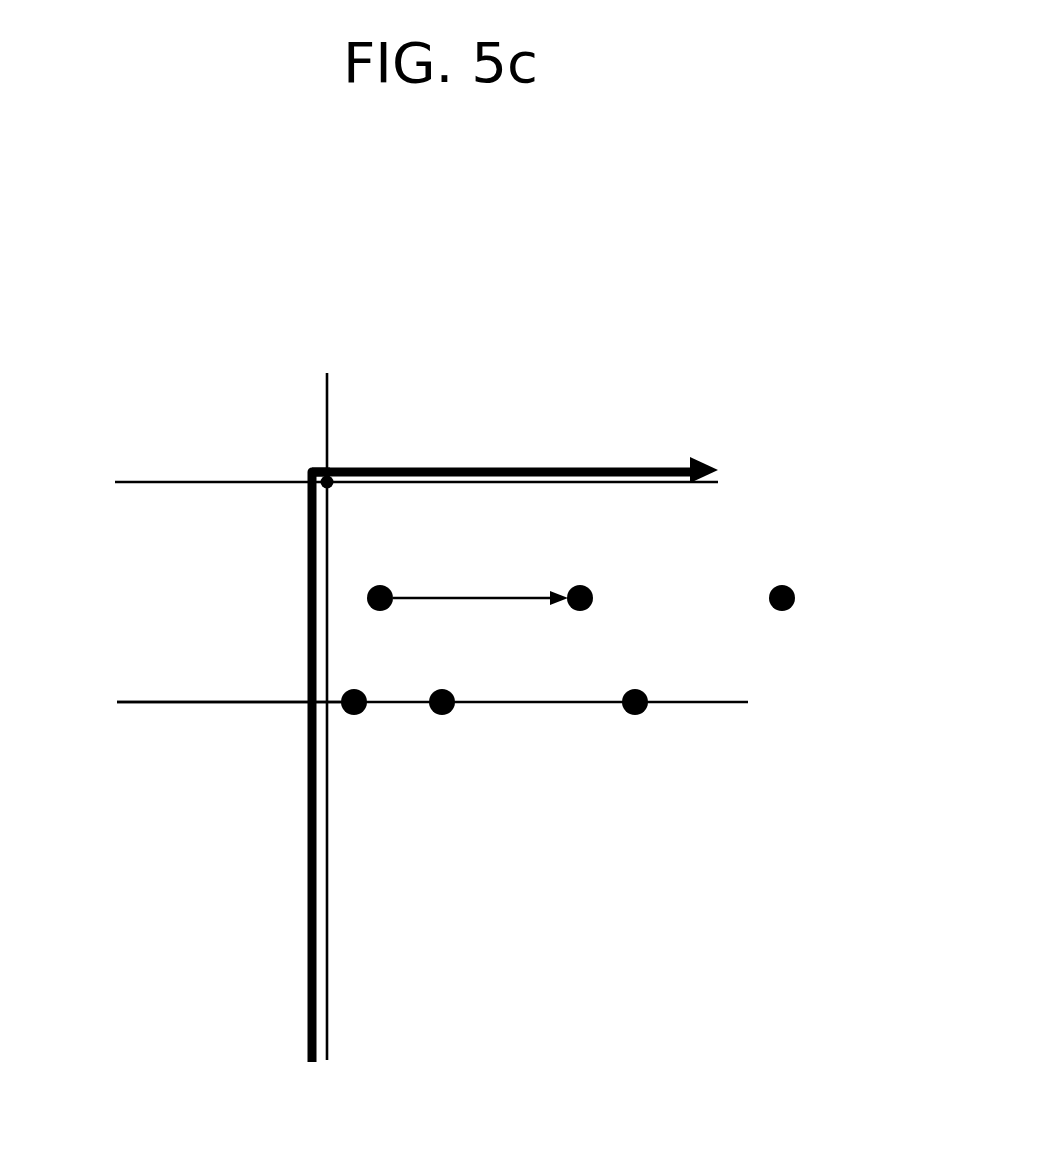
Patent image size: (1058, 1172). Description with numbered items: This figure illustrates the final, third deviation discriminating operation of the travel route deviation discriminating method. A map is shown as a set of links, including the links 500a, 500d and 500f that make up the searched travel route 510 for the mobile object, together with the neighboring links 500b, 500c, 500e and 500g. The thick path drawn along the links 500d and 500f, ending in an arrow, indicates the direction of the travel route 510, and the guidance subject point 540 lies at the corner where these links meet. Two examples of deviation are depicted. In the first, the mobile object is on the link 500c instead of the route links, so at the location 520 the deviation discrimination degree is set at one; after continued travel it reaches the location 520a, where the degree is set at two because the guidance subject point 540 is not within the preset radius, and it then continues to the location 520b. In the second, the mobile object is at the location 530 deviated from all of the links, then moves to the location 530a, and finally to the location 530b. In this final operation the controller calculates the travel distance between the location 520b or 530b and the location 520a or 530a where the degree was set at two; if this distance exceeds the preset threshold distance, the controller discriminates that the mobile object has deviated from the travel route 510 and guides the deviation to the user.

The link 500a is at (328, 838).
The link 500b is at (162, 703).
The link 500c is at (735, 700).
The link 500d is at (327, 606).
The link 500e is at (208, 482).
The link 500f is at (548, 483).
The link 500g is at (327, 405).
The travel route 510 is at (312, 690).
The location 520 is at (361, 714).
The location 520a is at (450, 712).
The location 520b is at (643, 712).
The location 530 is at (385, 588).
The location 530a is at (590, 587).
The location 530b is at (790, 587).
The guidance subject point 540 is at (324, 486).